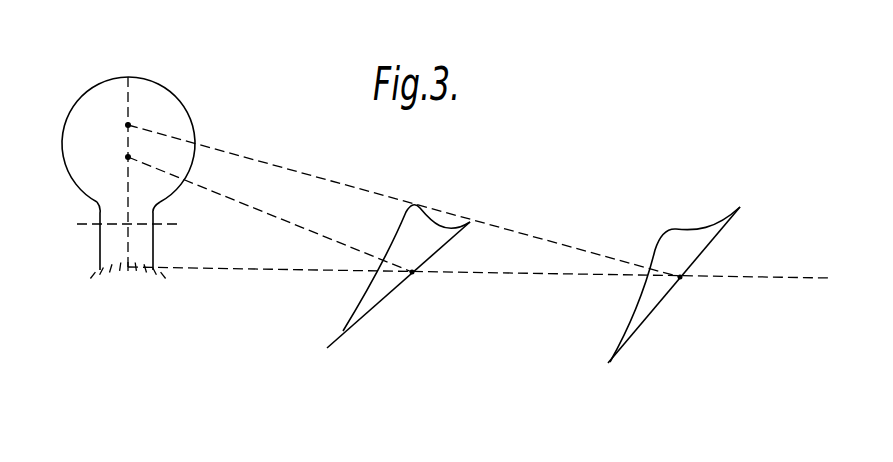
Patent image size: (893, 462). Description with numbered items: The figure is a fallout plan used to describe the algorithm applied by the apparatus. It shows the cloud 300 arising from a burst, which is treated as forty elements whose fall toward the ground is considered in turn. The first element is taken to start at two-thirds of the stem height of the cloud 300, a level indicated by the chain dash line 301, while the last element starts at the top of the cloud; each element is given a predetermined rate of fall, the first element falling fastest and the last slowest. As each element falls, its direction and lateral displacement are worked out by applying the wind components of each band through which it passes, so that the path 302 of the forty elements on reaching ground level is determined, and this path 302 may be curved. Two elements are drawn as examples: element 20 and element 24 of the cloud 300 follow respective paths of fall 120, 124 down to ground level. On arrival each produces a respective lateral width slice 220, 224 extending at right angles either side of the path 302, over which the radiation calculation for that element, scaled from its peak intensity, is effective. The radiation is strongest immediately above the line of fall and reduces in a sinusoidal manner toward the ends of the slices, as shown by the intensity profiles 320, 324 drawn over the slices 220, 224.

The element 20 is at (128, 157).
The element 24 is at (128, 125).
The path of fall 120 is at (291, 222).
The path of fall 124 is at (338, 183).
The lateral width slice 220 is at (369, 312).
The lateral width slice 224 is at (655, 308).
The cloud 300 is at (172, 105).
The chain dash line 301 is at (177, 224).
The path 302 is at (778, 277).
The intensity profile 320 is at (362, 303).
The intensity profile 324 is at (635, 307).